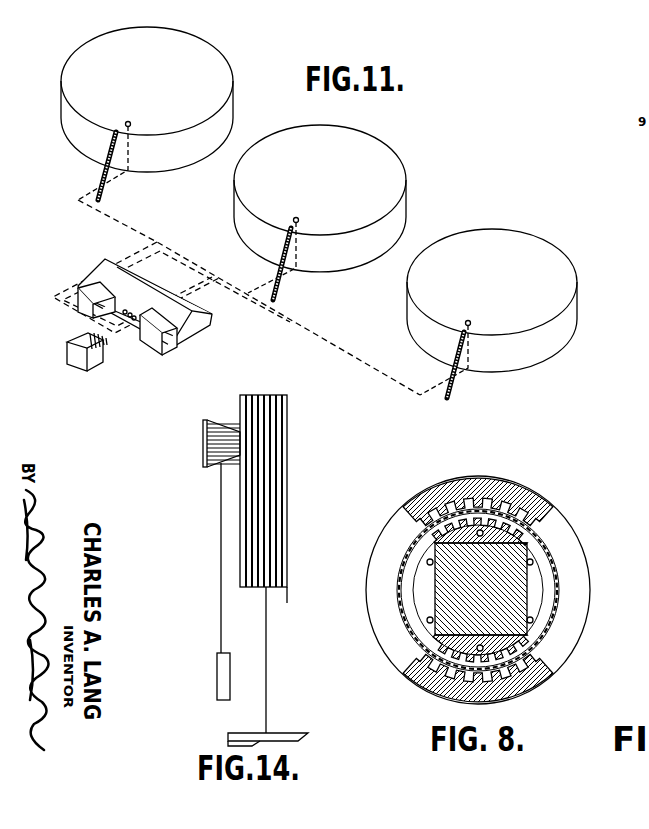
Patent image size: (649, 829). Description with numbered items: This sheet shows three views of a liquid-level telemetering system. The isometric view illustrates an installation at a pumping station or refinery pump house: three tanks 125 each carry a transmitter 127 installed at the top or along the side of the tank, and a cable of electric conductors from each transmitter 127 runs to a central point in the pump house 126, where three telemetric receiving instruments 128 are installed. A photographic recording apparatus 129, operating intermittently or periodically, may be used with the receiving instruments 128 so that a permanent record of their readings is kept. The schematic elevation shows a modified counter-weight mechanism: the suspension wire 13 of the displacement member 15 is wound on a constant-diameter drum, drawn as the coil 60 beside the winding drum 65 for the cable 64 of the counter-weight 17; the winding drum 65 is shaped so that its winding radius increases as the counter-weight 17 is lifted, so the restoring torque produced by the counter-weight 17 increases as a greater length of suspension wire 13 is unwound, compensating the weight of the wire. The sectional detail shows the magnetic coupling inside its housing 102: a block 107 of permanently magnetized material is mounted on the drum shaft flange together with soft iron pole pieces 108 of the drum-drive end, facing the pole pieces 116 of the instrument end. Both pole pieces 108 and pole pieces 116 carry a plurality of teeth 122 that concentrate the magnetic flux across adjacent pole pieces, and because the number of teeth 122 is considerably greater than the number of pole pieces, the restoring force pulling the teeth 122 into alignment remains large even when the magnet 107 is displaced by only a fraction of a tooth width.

In FIG. 11, the tanks 125 is at (200, 58).
In FIG. 11, the transmitter 127 is at (130, 122).
In FIG. 11, the pump house 126 is at (193, 327).
In FIG. 11, the telemetric receiving instruments 128 is at (131, 321).
In FIG. 11, the photographic recording apparatus 129 is at (73, 352).
In FIG. 14, the winding drum 65 is at (213, 464).
In FIG. 14, the coil 60 is at (265, 500).
In FIG. 14, the suspension wire 64 is at (221, 548).
In FIG. 14, the counter-weight 17 is at (217, 672).
In FIG. 14, the suspension wire 13 is at (267, 636).
In FIG. 14, the displacement member 15 is at (280, 732).
In FIG. 8, the stator housing 102 is at (557, 565).
In FIG. 8, the pole pieces 116 is at (497, 485).
In FIG. 8, the teeth 122 is at (475, 513).
In FIG. 8, the pole pieces 108 is at (503, 642).
In FIG. 8, the block of permanently magnetized material 107 is at (455, 583).